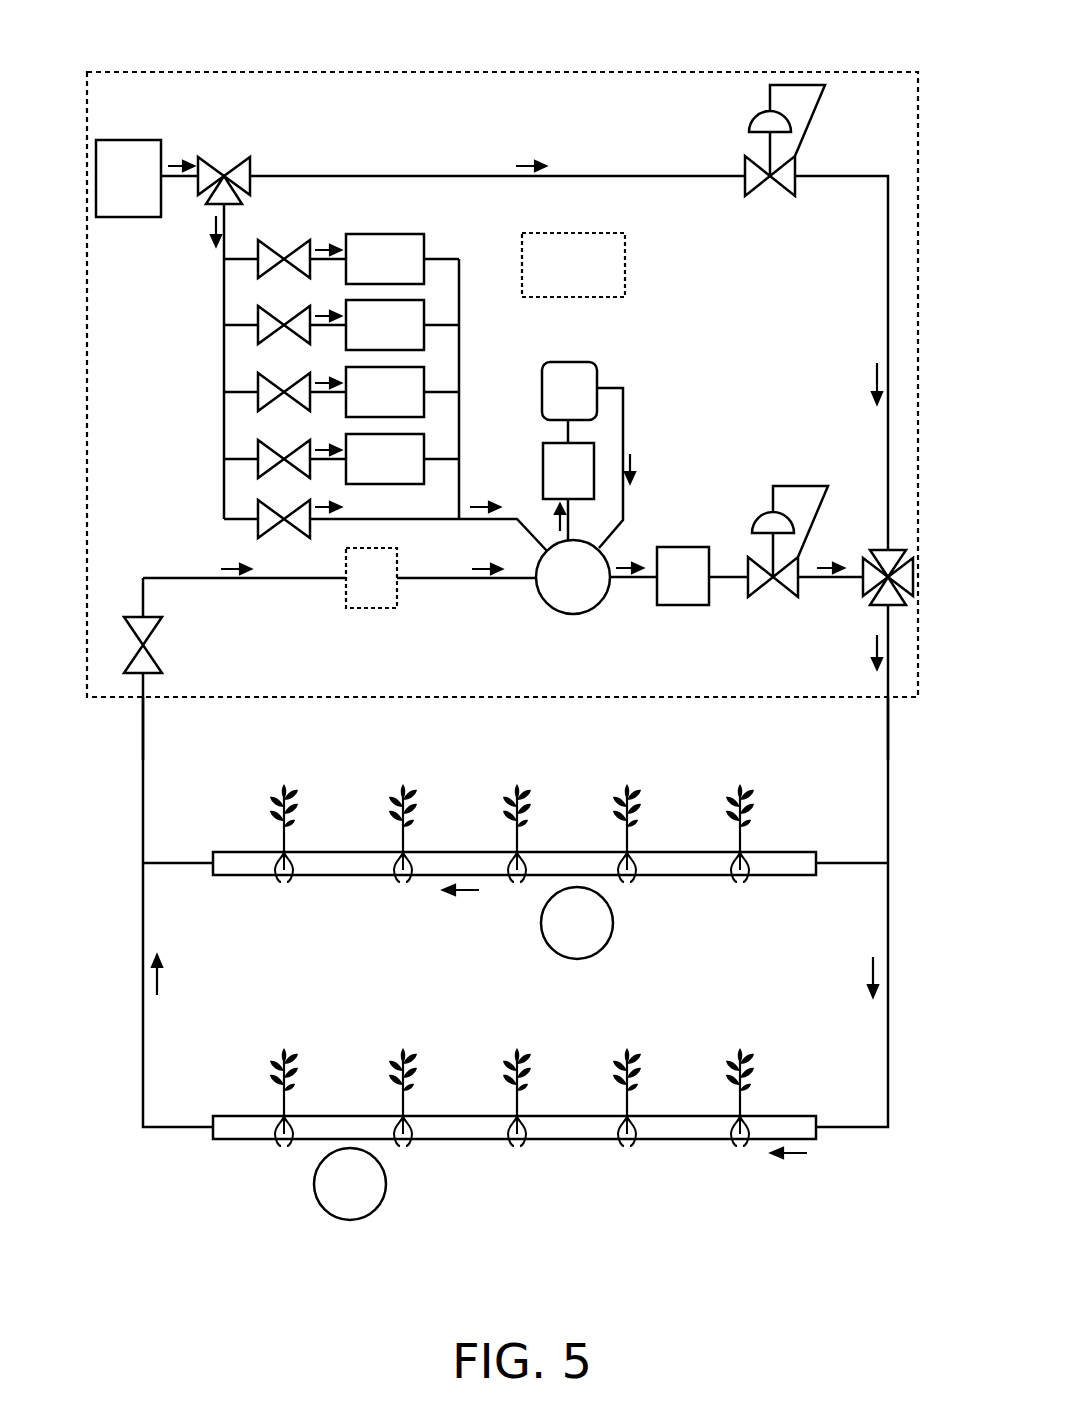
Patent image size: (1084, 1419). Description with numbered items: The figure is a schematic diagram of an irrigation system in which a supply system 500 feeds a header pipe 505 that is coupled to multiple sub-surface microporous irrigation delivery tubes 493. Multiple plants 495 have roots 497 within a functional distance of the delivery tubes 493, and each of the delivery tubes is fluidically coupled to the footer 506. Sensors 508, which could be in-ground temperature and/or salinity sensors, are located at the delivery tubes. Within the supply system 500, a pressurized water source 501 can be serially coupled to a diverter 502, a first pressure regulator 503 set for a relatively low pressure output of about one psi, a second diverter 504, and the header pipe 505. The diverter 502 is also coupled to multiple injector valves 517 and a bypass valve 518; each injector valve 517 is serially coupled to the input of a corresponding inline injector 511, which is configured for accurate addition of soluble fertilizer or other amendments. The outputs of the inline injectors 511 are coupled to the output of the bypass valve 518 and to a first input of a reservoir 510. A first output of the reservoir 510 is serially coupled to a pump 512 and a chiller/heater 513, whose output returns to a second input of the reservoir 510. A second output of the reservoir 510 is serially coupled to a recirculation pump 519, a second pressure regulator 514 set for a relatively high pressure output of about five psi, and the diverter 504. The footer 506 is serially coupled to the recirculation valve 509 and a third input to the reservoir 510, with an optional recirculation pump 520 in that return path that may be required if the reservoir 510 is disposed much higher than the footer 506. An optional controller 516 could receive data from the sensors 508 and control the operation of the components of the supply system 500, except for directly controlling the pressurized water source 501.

The supply system 500 is at (199, 72).
The pressurized water source 501 is at (128, 178).
The diverter 502 is at (252, 149).
The first pressure regulator 503 is at (738, 140).
The diverter 504 is at (851, 613).
The header pipe 505 is at (888, 749).
The footer 506 is at (143, 751).
The sensors 508 is at (463, 1053).
The recirculation valve 509 is at (195, 645).
The reservoir 510 is at (573, 577).
The inline injector 511 is at (385, 359).
The pump 512 is at (568, 471).
The chiller/heater 513 is at (569, 391).
The second pressure regulator 514 is at (768, 506).
The controller 516 is at (573, 265).
The injector valves 517 is at (240, 298).
The bypass valve 518 is at (230, 507).
The recirculation pump 519 is at (683, 576).
The recirculation pump 520 is at (371, 578).
The delivery tubes 493 is at (250, 876).
The plants 495 is at (512, 914).
The roots 497 is at (512, 1061).